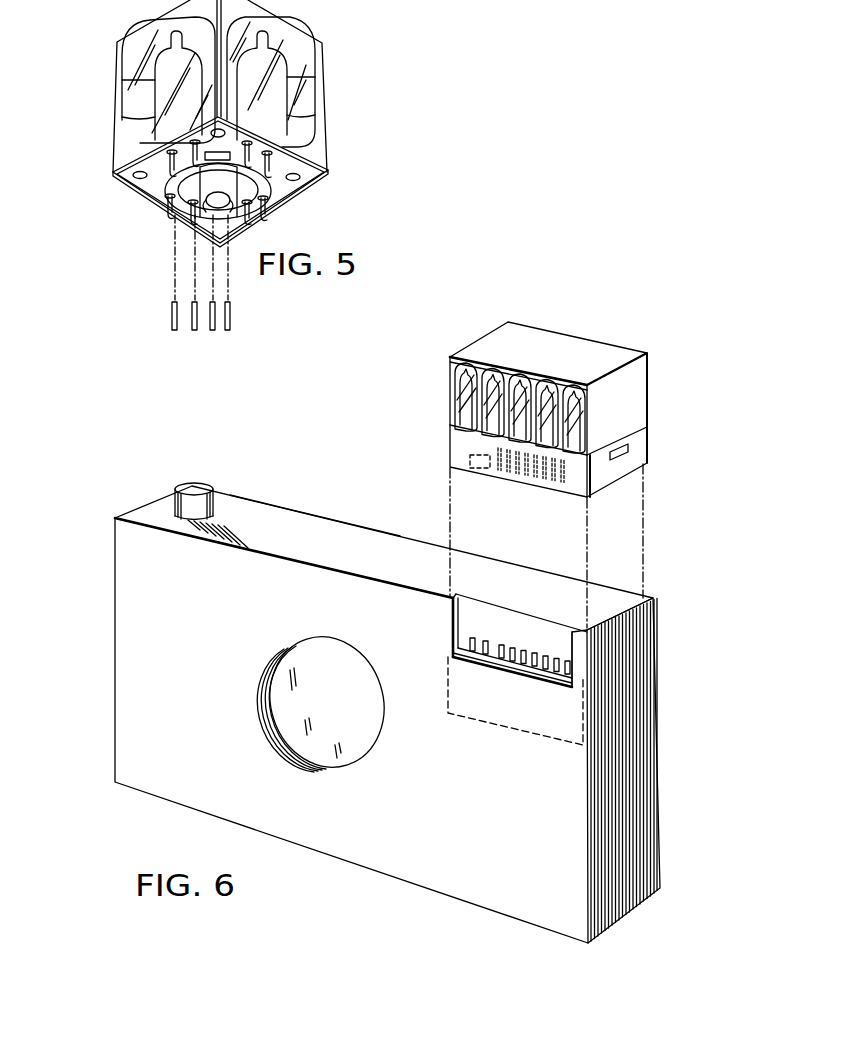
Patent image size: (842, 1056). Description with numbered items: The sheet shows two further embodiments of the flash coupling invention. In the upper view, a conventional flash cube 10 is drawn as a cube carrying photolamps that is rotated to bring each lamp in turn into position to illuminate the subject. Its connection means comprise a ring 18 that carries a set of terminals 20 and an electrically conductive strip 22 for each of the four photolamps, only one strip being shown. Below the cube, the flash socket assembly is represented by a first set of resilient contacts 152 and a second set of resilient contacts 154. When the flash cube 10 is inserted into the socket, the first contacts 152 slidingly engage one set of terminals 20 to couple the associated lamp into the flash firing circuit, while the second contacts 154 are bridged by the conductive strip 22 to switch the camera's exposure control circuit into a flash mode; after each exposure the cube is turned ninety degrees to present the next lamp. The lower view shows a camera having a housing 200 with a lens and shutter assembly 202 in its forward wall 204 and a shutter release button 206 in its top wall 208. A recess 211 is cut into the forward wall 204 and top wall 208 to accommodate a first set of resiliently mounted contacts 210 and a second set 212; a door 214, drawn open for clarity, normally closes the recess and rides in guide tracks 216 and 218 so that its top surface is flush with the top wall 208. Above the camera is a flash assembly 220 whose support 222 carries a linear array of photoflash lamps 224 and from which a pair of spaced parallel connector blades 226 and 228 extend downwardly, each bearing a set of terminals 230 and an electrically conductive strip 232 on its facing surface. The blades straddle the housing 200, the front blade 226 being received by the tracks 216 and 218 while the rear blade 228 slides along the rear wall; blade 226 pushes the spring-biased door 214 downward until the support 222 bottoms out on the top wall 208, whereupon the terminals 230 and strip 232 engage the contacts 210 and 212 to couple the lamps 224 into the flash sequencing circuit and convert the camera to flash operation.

In FIG. 5, the flash cube 10 is at (345, 60).
In FIG. 5, the electrically conductive strip 22 is at (210, 127).
In FIG. 5, the terminals 20 is at (167, 165).
In FIG. 5, the ring 18 is at (160, 203).
In FIG. 5, the first set of resilient contacts 152 is at (173, 317).
In FIG. 5, the second set of resilient contacts 154 is at (228, 322).
In FIG. 6, the housing 200 is at (340, 696).
In FIG. 6, the lens and shutter assembly 202 is at (308, 698).
In FIG. 6, the forward wall 204 is at (133, 646).
In FIG. 6, the shutter release button 206 is at (200, 461).
In FIG. 6, the top wall 208 is at (308, 535).
In FIG. 6, the first set of resiliently mounted contacts 210 is at (568, 649).
In FIG. 6, the recess edge 211 is at (455, 600).
In FIG. 6, the second set of resiliently mounted contacts 212 is at (492, 634).
In FIG. 6, the door 214 is at (515, 710).
In FIG. 6, the guide track 216 is at (585, 627).
In FIG. 6, the guide track 218 is at (456, 600).
In FIG. 6, the flash assembly 220 is at (517, 444).
In FIG. 6, the support 222 is at (604, 451).
In FIG. 6, the photoflash lamps 224 is at (462, 393).
In FIG. 6, the connector blade 226 is at (462, 452).
In FIG. 6, the connector blade 228 is at (636, 432).
In FIG. 6, the terminals 230 is at (568, 487).
In FIG. 6, the electrically conductive strip 232 is at (476, 468).